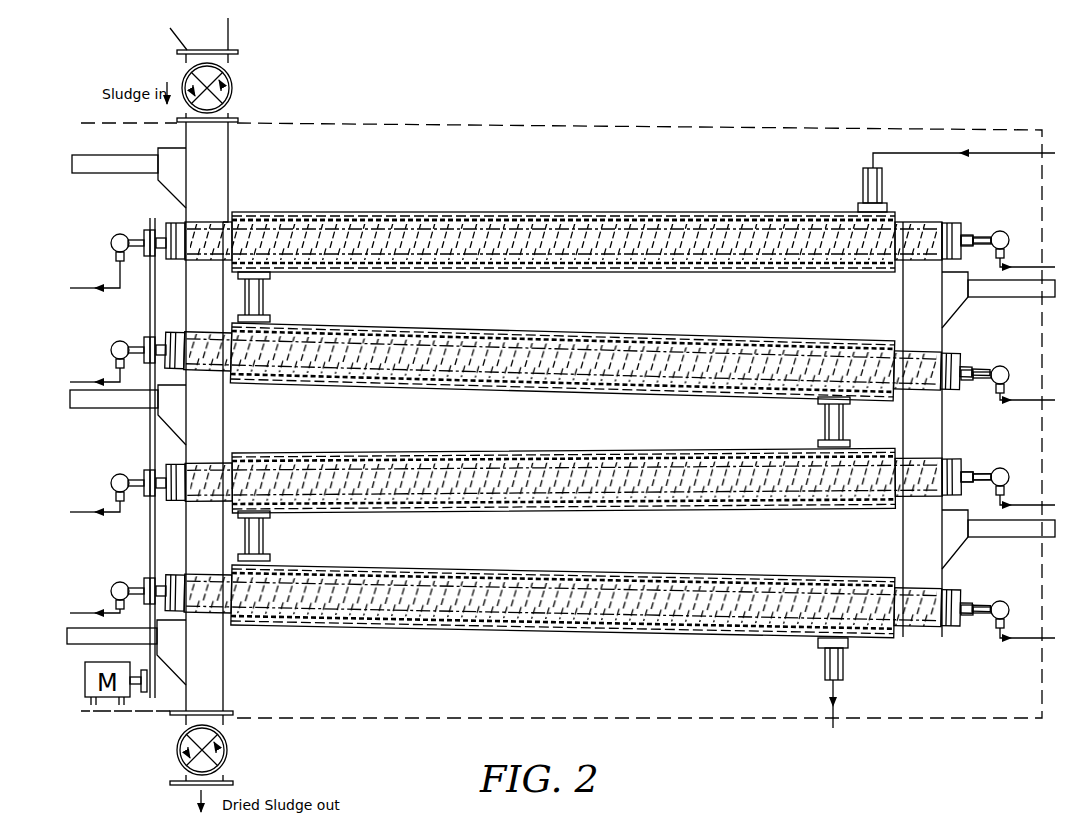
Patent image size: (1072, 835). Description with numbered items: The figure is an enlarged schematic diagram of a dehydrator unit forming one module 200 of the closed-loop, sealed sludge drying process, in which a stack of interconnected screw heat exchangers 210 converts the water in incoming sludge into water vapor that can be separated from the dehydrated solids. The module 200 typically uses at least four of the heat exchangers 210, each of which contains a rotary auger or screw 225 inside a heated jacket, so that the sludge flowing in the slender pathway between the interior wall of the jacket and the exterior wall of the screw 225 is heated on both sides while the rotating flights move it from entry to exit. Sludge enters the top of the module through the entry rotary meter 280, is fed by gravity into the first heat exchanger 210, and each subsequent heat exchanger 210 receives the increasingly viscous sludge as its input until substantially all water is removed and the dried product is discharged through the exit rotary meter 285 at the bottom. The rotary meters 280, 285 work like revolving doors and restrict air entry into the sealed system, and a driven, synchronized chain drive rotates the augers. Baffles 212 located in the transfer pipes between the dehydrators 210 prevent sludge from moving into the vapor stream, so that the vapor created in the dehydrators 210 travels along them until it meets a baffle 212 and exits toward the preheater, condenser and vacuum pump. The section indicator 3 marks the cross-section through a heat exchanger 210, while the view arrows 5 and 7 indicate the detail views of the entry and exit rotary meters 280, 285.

The module of interconnected heat exchangers 200 is at (1008, 100).
The screw heat exchanger 210 is at (577, 443).
The baffle 212 is at (165, 199).
The rotary auger or screw 225 is at (563, 189).
The entry rotary meter 280 is at (232, 90).
The exit rotary meter 285 is at (177, 748).
The section line 3 is at (590, 205).
The view arrow 5 is at (296, 84).
The view arrow 7 is at (274, 729).